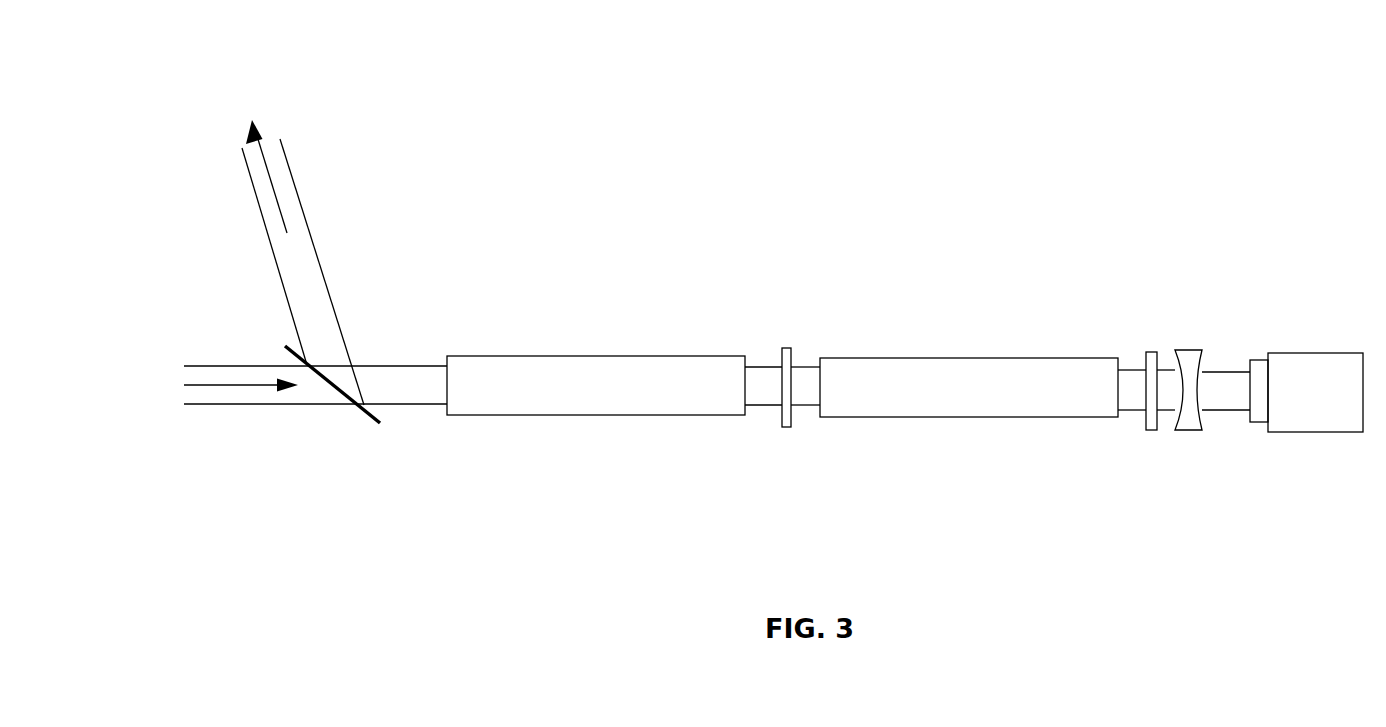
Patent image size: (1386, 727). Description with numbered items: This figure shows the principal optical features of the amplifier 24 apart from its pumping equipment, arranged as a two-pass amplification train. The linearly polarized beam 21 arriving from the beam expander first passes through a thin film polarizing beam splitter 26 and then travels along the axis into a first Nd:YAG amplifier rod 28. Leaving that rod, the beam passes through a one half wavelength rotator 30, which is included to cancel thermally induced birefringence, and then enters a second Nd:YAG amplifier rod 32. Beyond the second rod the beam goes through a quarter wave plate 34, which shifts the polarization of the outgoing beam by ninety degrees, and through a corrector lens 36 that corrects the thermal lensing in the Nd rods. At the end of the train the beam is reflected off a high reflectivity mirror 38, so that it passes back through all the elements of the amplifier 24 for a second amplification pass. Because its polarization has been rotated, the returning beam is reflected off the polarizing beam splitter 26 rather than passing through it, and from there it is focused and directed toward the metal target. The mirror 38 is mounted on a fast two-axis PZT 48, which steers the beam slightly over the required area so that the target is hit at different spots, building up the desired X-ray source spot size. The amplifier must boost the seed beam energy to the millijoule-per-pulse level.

The linearly polarized beam 21 is at (222, 385).
The amplifier 24 is at (826, 164).
The thin film polarizing beam splitter 26 is at (370, 420).
The first Nd:YAG amplifier rod 28 is at (595, 355).
The one half wavelength rotator 30 is at (783, 350).
The second Nd:YAG amplifier rod 32 is at (978, 358).
The quarter wave plate 34 is at (1148, 350).
The corrector lens 36 is at (1195, 350).
The high reflectivity mirror 38 is at (1250, 420).
The fast two-axis PZT 48 is at (1313, 353).